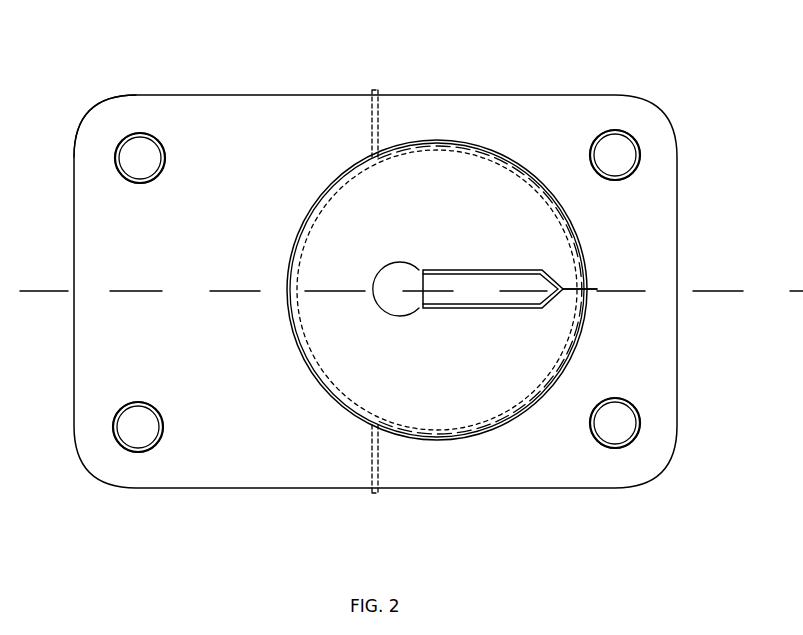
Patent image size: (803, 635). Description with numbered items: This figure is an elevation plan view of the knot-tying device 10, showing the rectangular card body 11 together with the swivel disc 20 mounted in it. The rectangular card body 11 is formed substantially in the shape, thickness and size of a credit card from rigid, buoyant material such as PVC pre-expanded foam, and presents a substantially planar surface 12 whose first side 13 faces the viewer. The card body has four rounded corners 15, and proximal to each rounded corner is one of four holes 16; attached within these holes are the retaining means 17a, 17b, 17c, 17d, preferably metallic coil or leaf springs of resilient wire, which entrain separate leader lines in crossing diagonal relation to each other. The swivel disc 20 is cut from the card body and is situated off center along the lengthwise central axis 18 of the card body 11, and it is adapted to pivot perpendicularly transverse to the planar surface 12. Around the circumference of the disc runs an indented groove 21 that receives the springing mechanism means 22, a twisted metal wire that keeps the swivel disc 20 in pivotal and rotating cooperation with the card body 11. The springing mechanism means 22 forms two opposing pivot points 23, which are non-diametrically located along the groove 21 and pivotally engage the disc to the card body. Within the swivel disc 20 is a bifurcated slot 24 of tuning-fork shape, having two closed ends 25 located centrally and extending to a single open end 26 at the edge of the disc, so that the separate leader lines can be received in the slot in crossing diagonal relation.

The knot-tying device 10 is at (510, 77).
The rectangular card body 11 is at (247, 95).
The planar surface 12 is at (283, 157).
The first side 13 is at (219, 262).
The rounded corners 15 is at (98, 112).
The holes 16 is at (137, 147).
The retaining means 17a is at (620, 180).
The retaining means 17b is at (148, 448).
The retaining means 17c is at (138, 180).
The retaining means 17d is at (617, 445).
The lengthwise central axis 18 is at (703, 291).
The swivel disc 20 is at (437, 290).
The indented groove 21 is at (350, 183).
The springing mechanism means 22 is at (488, 155).
The opposing pivot points 23 is at (372, 158).
The bifurcated slot 24 is at (480, 254).
The closed ends 25 is at (400, 261).
The open end 26 is at (593, 288).